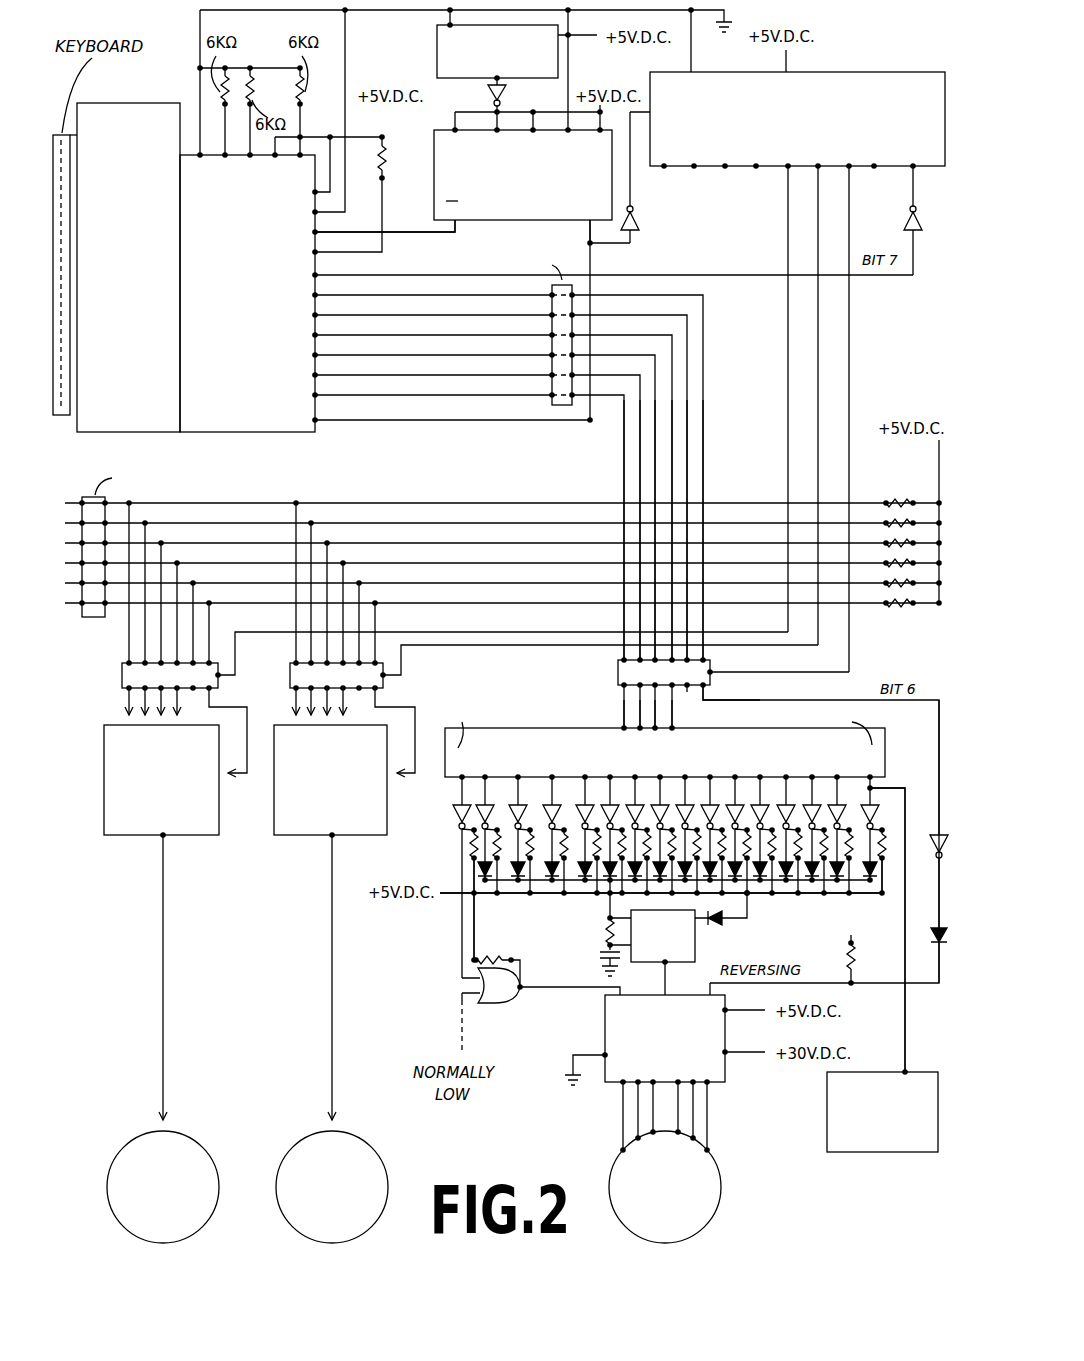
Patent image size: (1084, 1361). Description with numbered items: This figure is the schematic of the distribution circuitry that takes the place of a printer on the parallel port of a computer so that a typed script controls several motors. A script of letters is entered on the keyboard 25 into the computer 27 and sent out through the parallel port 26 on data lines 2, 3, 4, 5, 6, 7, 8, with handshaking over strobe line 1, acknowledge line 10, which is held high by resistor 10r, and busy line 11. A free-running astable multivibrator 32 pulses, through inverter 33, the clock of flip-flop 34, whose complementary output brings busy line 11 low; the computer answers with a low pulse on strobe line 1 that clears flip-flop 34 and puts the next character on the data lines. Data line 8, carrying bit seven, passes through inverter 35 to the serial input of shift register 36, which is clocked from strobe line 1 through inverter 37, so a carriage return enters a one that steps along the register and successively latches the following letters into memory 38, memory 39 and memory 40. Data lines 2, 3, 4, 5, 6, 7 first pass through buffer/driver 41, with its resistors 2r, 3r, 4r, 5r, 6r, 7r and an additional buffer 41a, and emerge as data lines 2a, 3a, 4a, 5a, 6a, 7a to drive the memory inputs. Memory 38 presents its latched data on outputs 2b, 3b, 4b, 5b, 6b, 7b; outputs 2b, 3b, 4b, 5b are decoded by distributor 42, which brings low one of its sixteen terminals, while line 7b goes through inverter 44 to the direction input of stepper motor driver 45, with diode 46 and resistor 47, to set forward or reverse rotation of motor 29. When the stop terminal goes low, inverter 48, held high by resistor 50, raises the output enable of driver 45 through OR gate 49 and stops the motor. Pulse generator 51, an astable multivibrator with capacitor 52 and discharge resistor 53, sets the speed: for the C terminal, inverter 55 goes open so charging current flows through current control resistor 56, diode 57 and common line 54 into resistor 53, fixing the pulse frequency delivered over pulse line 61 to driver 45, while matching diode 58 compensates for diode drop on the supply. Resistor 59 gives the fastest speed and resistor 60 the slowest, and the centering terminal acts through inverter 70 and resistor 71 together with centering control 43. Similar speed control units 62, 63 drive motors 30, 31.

The strobe line 1 is at (386, 425).
The data line 2 is at (405, 400).
The data line 3 is at (425, 380).
The data line 4 is at (448, 358).
The data line 5 is at (420, 333).
The data line 6 is at (445, 313).
The data line 7 is at (465, 294).
The data line 8 is at (488, 280).
The acknowledge line 10 is at (382, 190).
The resistor 10r is at (397, 157).
The busy line 11 is at (458, 236).
The keyboard 25 is at (62, 418).
The parallel port 26 is at (238, 434).
The computer 27 is at (112, 103).
The motor 29 is at (715, 1160).
The motor 30 is at (368, 1150).
The motor 31 is at (200, 1150).
The astable multivibrator 32 is at (435, 62).
The inverter 33 is at (486, 93).
The flip-flop 34 is at (434, 172).
The inverter 35 is at (922, 222).
The shift register 36 is at (868, 70).
The inverter 37 is at (638, 222).
The memory 38 is at (618, 678).
The memory 39 is at (290, 676).
The memory 40 is at (122, 676).
The buffer/driver 41 is at (562, 412).
The buffer 41a is at (94, 620).
The distributor 42 is at (887, 750).
The centering control 43 is at (825, 1125).
The inverter 44 is at (930, 838).
The stepper motor driver 45 is at (603, 1018).
The diode 46 is at (944, 932).
The resistor 47 is at (858, 960).
The open collector inverter 48 is at (452, 813).
The OR gate 49 is at (493, 1004).
The resistor 50 is at (470, 840).
The pulse generator 51 is at (648, 962).
The capacitor 52 is at (595, 962).
The discharge resistor 53 is at (603, 934).
The common line 54 is at (476, 900).
The inverter 55 is at (530, 830).
The current control resistor 56 is at (564, 830).
The diode 57 is at (532, 897).
The matching diode 58 is at (722, 926).
The current control resistor 59 is at (498, 830).
The current control resistor 60 is at (861, 825).
The pulse line 61 is at (670, 972).
The speed control unit 62 is at (288, 840).
The speed control unit 63 is at (118, 840).
The open collector inverter 70 is at (880, 790).
The resistor 71 is at (884, 850).
The data line 2a is at (624, 416).
The data line 3a is at (640, 440).
The data line 4a is at (655, 466).
The data line 5a is at (675, 393).
The data line 6a is at (690, 432).
The data line 7a is at (704, 460).
The memory output 2b is at (624, 702).
The memory output 3b is at (638, 710).
The memory output 4b is at (653, 718).
The memory output 5b is at (670, 724).
The memory output 6b is at (688, 697).
The memory output 7b is at (712, 700).
The resistor 2r is at (898, 500).
The resistor 3r is at (885, 520).
The resistor 4r is at (912, 540).
The resistor 5r is at (913, 568).
The resistor 6r is at (887, 588).
The resistor 7r is at (898, 612).